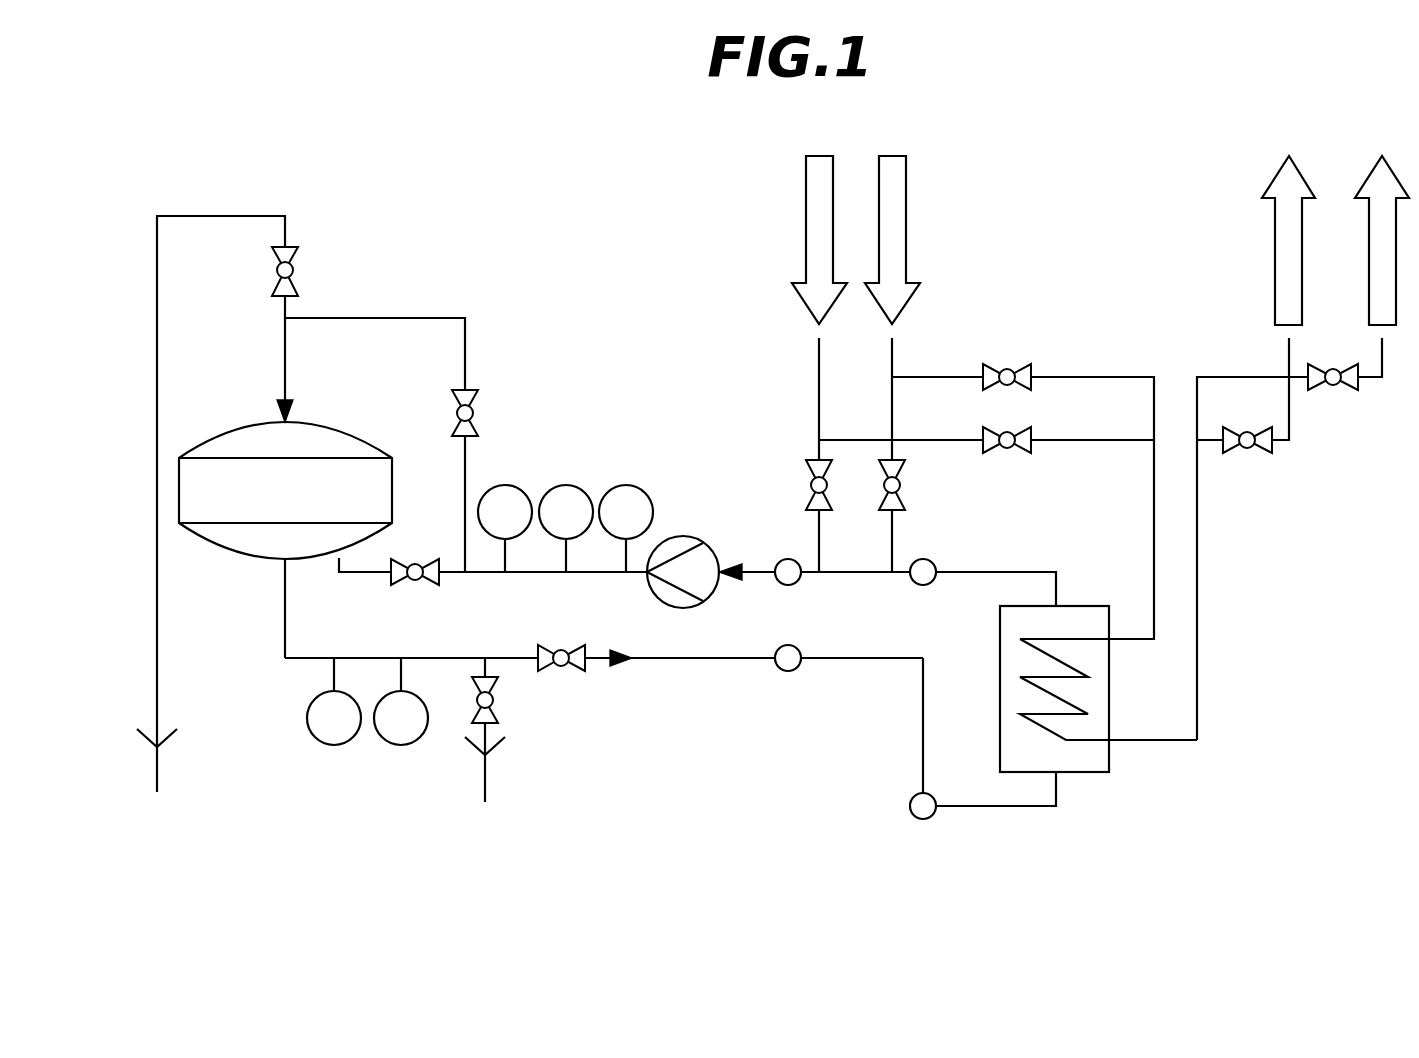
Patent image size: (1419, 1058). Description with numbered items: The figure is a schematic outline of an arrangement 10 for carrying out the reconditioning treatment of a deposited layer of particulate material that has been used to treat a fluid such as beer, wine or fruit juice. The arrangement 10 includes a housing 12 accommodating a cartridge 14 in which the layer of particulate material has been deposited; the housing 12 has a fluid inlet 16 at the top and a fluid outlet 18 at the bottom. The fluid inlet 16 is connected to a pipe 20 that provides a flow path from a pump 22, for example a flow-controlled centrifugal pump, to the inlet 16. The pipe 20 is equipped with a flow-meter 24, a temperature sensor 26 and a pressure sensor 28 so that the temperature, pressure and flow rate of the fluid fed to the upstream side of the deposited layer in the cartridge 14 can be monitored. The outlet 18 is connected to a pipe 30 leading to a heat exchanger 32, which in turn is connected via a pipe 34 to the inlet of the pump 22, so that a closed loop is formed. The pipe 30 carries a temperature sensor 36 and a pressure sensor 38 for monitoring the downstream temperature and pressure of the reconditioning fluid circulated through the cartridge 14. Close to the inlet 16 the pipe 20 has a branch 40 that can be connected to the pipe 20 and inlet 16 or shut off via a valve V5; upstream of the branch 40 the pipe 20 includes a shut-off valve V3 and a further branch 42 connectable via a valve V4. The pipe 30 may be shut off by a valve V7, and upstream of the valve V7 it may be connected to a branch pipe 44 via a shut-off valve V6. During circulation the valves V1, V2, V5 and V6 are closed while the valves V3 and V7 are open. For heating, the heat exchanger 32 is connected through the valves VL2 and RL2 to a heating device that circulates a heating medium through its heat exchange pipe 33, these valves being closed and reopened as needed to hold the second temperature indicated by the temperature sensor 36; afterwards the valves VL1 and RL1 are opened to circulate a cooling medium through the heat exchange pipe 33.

The arrangement 10 is at (1030, 208).
The housing 12 is at (314, 445).
The cartridge 14 is at (364, 495).
The fluid inlet 16 is at (290, 420).
The fluid outlet 18 is at (285, 564).
The pipe 20 is at (443, 318).
The pump 22 is at (687, 536).
The flow-meter 24 is at (629, 485).
The temperature sensor 26 is at (569, 485).
The pressure sensor 28 is at (509, 485).
The pipe 30 is at (296, 660).
The heat exchanger 32 is at (1098, 653).
The heat exchange pipe 33 is at (1093, 704).
The pipe 34 is at (980, 572).
The temperature sensor 36 is at (399, 746).
The pressure sensor 38 is at (332, 746).
The branch 40 is at (272, 216).
The further branch 42 is at (355, 575).
The branch pipe 44 is at (488, 733).
The valve V1 is at (899, 364).
The valve V2 is at (826, 364).
The shut-off valve V3 is at (479, 413).
The valve V4 is at (415, 584).
The valve V5 is at (298, 271).
The shut-off valve V6 is at (499, 700).
The valve V7 is at (561, 670).
The valve VL1 is at (986, 452).
The valve VL2 is at (1023, 501).
The valve RL1 is at (1256, 317).
The valve RL2 is at (1303, 448).